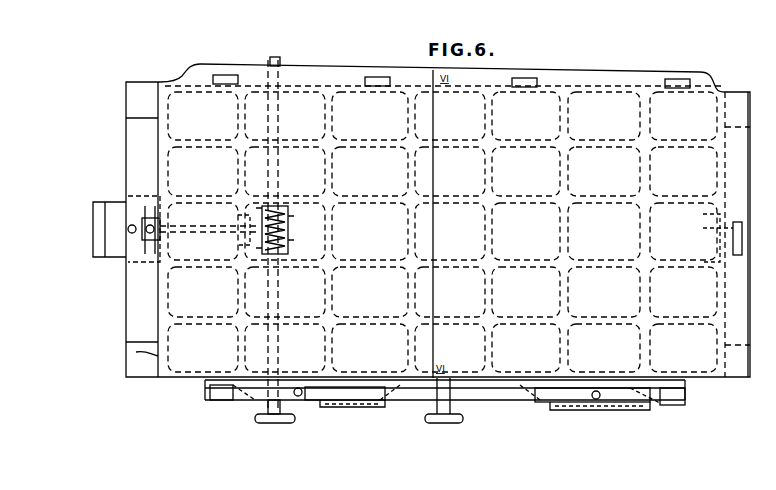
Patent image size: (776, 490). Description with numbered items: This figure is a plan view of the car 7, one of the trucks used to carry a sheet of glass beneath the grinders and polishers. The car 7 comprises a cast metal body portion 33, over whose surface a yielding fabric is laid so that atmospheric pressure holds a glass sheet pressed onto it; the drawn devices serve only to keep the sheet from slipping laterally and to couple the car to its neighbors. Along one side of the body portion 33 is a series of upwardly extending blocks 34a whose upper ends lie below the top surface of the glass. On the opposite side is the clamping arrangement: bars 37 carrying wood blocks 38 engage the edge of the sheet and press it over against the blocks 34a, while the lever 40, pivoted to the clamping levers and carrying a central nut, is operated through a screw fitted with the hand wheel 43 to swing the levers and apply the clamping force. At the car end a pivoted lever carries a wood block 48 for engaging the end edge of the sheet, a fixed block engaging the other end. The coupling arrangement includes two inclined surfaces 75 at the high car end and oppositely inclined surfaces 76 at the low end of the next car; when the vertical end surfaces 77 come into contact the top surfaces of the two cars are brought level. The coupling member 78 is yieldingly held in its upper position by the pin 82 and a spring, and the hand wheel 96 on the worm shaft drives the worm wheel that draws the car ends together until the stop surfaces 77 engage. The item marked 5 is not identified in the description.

The car 7 is at (588, 84).
The cast metal body portion 33 is at (442, 232).
The inclined surfaces 75 is at (147, 90).
The inclined surfaces 76 is at (742, 106).
The vertical end surfaces 77 is at (136, 352).
The upwardly extending blocks 34a is at (228, 75).
The hand wheel 96 is at (284, 422).
The wood block 48 is at (142, 218).
The coupling member 78 is at (113, 258).
The pin 82 is at (127, 229).
The stop member 5 is at (740, 224).
The lever 40 is at (485, 400).
The bars 37 is at (326, 394).
The wood blocks 38 is at (225, 392).
The hand wheel 43 is at (447, 424).